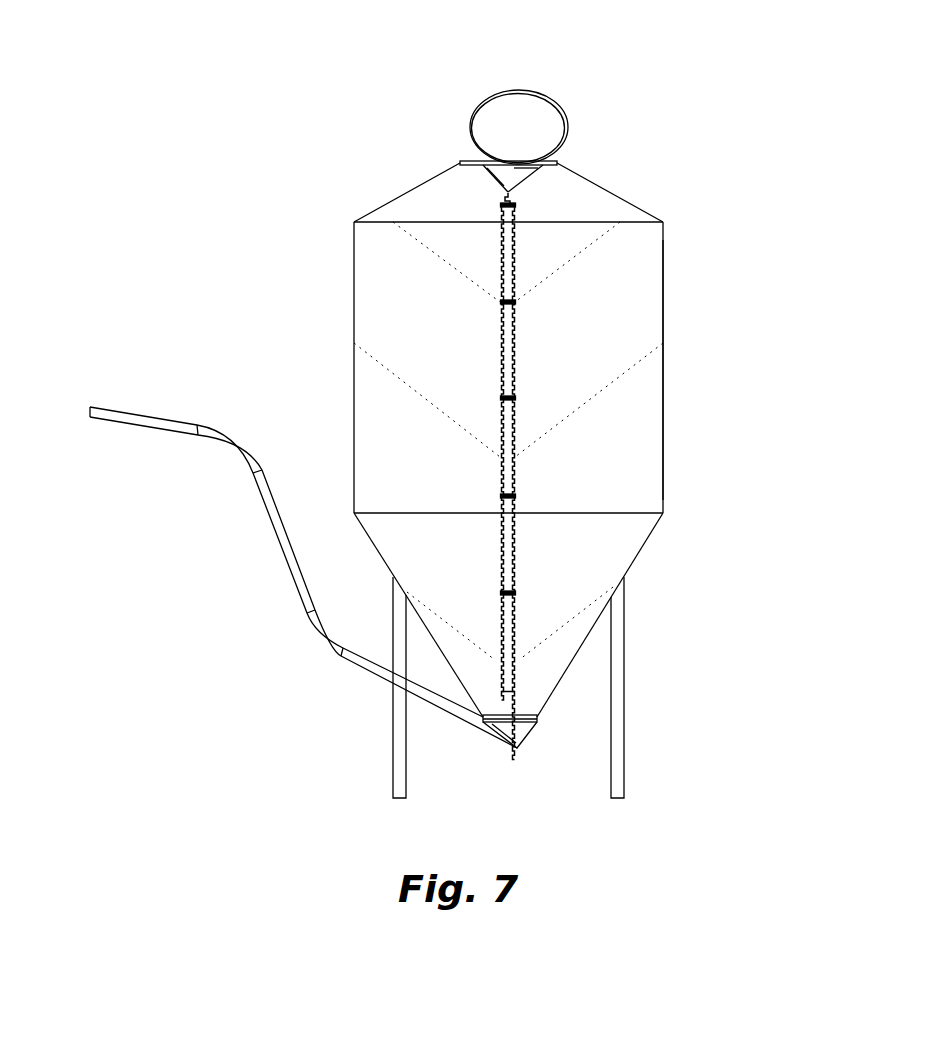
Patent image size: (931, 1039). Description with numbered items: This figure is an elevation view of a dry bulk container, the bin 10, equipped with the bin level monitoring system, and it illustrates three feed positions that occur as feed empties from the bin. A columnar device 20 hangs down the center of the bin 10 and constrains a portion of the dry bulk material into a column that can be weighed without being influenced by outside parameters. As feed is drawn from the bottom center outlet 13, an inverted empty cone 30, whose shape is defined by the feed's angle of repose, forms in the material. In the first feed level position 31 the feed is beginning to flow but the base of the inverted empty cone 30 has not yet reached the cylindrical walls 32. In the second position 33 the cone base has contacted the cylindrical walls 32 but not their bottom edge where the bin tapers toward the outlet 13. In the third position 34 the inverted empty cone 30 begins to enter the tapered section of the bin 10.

The bin 10 is at (635, 162).
The bottom center outlet 13 is at (517, 717).
The columnar device 20 is at (513, 542).
The inverted empty cone 30 is at (470, 252).
The first feed level position 31 is at (428, 253).
The cylindrical walls 32 is at (663, 437).
The second feed level position 33 is at (413, 392).
The third feed level position 34 is at (453, 627).